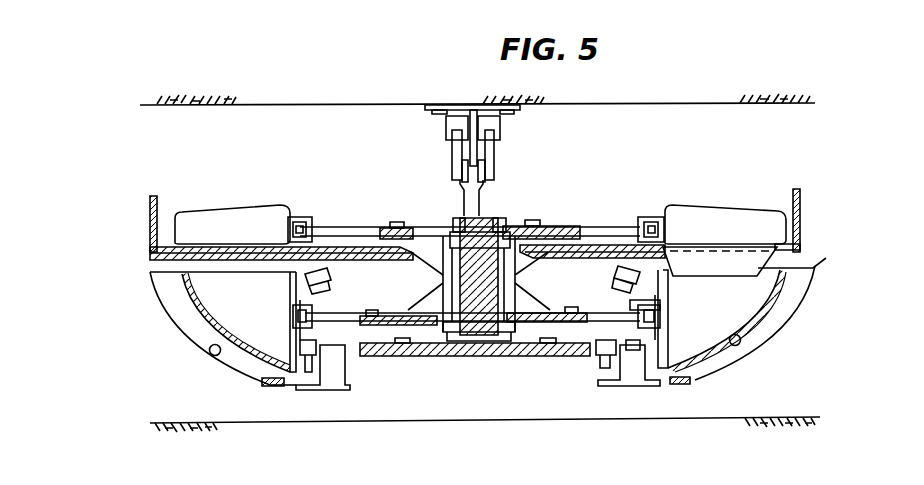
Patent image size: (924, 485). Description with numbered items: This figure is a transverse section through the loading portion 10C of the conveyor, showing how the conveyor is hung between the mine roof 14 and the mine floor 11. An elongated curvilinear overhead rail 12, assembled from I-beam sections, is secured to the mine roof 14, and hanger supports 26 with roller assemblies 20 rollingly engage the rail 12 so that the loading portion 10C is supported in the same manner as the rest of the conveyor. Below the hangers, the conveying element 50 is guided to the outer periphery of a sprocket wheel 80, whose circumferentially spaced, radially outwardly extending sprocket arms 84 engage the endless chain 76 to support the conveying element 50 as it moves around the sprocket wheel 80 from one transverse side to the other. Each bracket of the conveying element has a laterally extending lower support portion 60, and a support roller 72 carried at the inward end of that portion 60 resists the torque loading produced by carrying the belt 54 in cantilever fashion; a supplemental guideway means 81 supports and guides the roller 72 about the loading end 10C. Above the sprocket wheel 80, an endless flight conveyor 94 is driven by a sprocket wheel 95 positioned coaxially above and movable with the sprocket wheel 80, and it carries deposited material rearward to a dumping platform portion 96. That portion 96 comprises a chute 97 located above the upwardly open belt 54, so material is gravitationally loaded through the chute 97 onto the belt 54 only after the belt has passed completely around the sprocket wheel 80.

The mine roof 14 is at (362, 90).
The overhead rail 12 is at (474, 105).
The roller assemblies 20 is at (492, 150).
The hanger supports 26 is at (458, 172).
The loading portion 10C is at (384, 210).
The sprocket wheel 95 is at (527, 232).
The endless flight conveyor 94 is at (250, 216).
The dumping platform portion 96 is at (801, 246).
The chute 97 is at (808, 268).
The conveying element 50 is at (766, 326).
The belt 54 is at (742, 321).
The sprocket arms 84 is at (352, 316).
The sprocket wheel 80 is at (550, 322).
The endless chain 76 is at (645, 306).
The guideway means 81 is at (443, 357).
The support roller 72 is at (600, 358).
The lower support portion 60 is at (651, 374).
The floor 11 is at (480, 456).